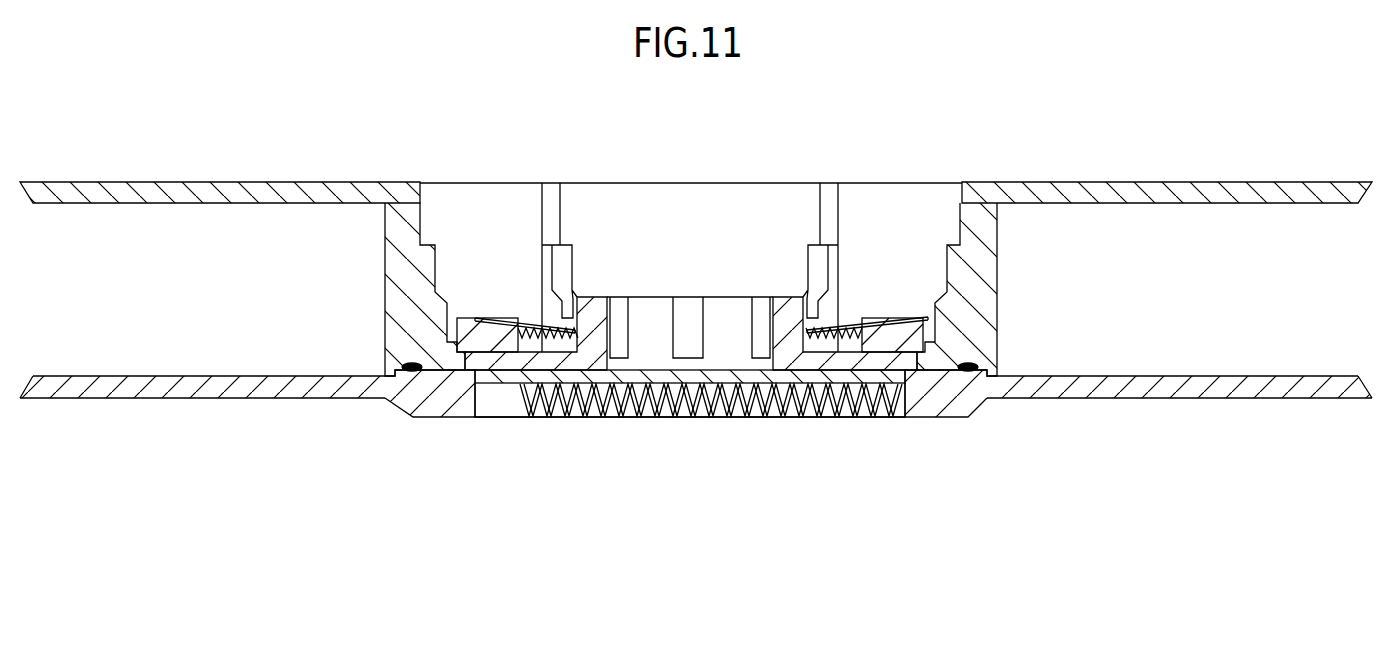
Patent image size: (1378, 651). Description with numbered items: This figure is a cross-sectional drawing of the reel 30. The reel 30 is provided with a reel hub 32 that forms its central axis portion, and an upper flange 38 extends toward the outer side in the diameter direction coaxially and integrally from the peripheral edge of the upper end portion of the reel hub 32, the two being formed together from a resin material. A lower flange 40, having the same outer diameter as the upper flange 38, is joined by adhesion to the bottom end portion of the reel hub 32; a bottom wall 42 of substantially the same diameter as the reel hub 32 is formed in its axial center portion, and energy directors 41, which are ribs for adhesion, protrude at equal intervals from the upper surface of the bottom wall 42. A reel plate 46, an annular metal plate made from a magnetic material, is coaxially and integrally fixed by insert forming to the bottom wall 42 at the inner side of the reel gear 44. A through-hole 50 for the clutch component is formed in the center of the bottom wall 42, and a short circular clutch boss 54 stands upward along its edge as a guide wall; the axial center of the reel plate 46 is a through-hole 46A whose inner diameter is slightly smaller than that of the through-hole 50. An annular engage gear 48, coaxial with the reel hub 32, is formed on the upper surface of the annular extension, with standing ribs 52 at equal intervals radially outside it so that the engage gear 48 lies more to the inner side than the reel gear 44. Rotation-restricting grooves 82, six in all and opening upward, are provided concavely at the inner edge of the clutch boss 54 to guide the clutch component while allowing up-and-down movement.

The reel 30 is at (1207, 118).
The reel hub 32 is at (998, 288).
The upper flange 38 is at (1183, 204).
The lower flange 40 is at (1222, 376).
The energy directors 41 is at (410, 364).
The bottom wall 42 is at (442, 382).
The reel gear 44 is at (575, 418).
The reel plate 46 is at (498, 385).
The through-hole 46A is at (624, 377).
The engage gear 48 is at (880, 320).
The through-hole 50 is at (773, 358).
The standing ribs 52 is at (817, 266).
The clutch boss 54 is at (592, 317).
The rotation-restricting grooves 82 is at (676, 325).